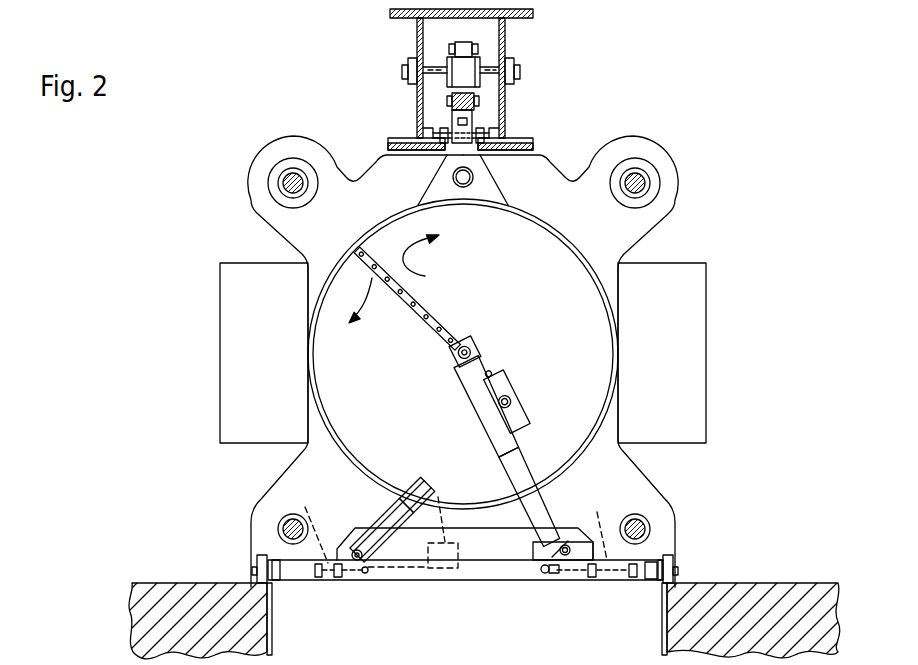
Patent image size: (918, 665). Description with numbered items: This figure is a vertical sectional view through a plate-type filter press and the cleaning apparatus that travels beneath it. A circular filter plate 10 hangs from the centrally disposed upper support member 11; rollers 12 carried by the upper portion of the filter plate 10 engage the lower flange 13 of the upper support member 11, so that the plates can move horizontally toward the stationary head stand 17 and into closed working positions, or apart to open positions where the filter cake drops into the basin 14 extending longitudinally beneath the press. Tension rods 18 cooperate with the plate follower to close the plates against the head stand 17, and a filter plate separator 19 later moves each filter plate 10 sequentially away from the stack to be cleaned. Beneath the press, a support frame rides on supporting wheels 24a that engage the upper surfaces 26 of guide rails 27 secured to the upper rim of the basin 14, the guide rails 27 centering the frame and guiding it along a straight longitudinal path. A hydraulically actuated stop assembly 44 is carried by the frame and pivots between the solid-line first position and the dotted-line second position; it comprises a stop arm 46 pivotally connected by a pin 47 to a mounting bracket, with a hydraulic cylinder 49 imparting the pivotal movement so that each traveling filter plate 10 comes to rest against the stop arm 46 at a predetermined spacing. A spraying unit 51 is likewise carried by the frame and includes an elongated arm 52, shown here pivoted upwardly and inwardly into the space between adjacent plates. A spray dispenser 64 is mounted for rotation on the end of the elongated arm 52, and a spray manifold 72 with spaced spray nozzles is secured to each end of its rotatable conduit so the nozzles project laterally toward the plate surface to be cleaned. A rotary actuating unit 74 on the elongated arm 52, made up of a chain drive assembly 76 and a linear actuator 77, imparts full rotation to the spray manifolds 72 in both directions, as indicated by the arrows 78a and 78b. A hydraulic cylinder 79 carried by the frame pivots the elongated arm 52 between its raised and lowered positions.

The filter plate 10 is at (598, 348).
The upper support member 11 is at (406, 37).
The roller 12 is at (442, 130).
The lower flange 13 is at (407, 143).
The basin 14 is at (272, 650).
The head stand 17 is at (640, 230).
The tension rod 18 is at (283, 171).
The filter plate separator 19 is at (478, 60).
The supporting wheel 24a is at (254, 554).
The upper surface 26 is at (250, 584).
The guide rail 27 is at (291, 596).
The stop assembly 44 is at (361, 515).
The stop arm 46 is at (416, 478).
The pin 47 is at (328, 566).
The hydraulic cylinder 49 is at (307, 520).
The spraying unit 51 is at (478, 408).
The elongated arm 52 is at (516, 463).
The spray dispenser 64 is at (457, 363).
The spray manifold 72 is at (430, 318).
The rotary actuating unit 74 is at (528, 372).
The chain drive assembly 76 is at (488, 373).
The linear actuator 77 is at (520, 420).
The arrow 78a is at (369, 324).
The arrow 78b is at (435, 264).
The hydraulic cylinder 79 is at (596, 519).